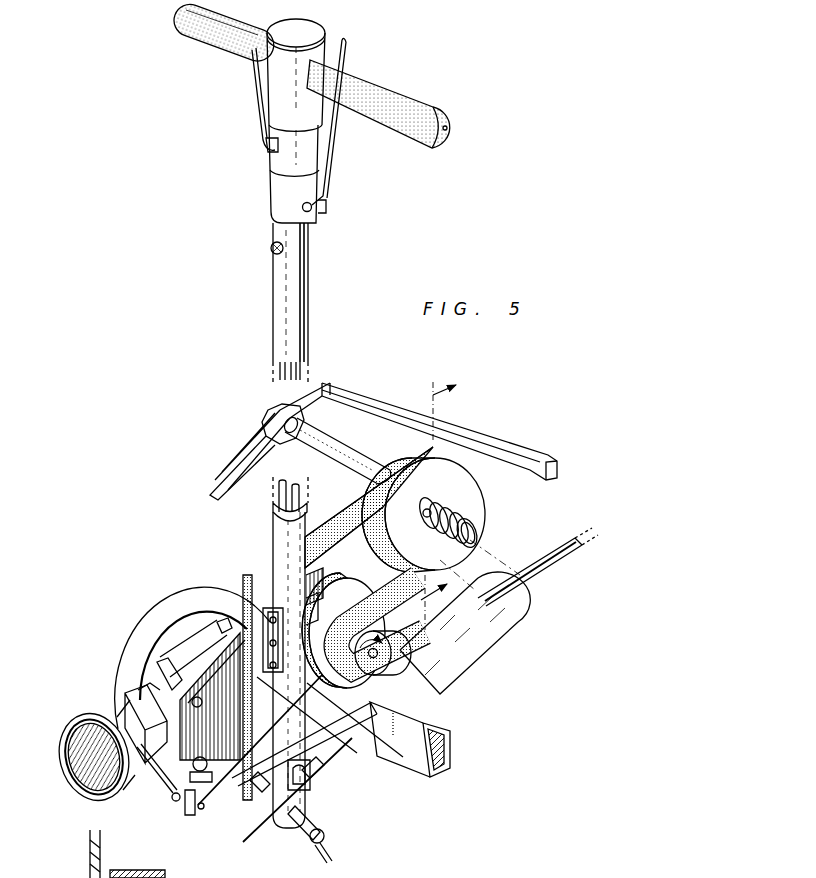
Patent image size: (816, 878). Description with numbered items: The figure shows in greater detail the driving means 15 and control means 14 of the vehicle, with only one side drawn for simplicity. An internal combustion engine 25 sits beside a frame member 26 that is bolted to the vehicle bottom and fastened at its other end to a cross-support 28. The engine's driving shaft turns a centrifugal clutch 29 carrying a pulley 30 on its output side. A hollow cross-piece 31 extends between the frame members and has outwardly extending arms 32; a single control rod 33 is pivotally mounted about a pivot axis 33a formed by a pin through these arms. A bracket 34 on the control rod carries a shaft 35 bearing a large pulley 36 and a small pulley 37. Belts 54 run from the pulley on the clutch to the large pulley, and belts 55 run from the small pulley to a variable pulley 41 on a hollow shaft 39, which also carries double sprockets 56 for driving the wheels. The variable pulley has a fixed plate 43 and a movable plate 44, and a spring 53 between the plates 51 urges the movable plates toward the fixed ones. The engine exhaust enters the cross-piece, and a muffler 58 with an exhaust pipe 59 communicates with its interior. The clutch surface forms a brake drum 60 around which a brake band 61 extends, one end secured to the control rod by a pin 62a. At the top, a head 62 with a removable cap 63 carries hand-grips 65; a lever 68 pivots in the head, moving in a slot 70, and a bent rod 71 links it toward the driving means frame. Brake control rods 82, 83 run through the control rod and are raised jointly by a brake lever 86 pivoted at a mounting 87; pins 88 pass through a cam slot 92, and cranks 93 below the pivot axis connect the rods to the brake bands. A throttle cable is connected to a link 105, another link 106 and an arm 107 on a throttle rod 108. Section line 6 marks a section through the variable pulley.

The control means 14 is at (405, 68).
The driving means 15 is at (238, 580).
The internal combustion engine 25 is at (185, 648).
The frame member 26 is at (145, 740).
The cross-support 28 is at (510, 452).
The centrifugal clutch 29 is at (232, 780).
The pulley 30 is at (312, 780).
The cross-piece 31 is at (452, 734).
The arm 32 is at (358, 728).
The control rod 33 is at (290, 296).
The pivot axis 33a is at (292, 800).
The bracket 34 is at (262, 628).
The shaft 35 is at (378, 656).
The large pulley 36 is at (343, 607).
The small pulley 37 is at (392, 653).
The shaft 39 is at (318, 446).
The variable pulley 41 is at (488, 504).
The fixed plate 43 is at (373, 533).
The movable plate 44 is at (440, 490).
The plate 51 is at (432, 510).
The spring 53 is at (476, 527).
The belt 54 is at (330, 740).
The belt 55 is at (372, 510).
The sprocket 56 is at (262, 420).
The muffler 58 is at (505, 604).
The exhaust pipe 59 is at (560, 558).
The brake drum 60 is at (227, 737).
The brake band 61 is at (138, 690).
The head 62 is at (300, 148).
The pin 62a is at (324, 764).
The cap 63 is at (312, 33).
The hand-grip 65 is at (205, 50).
The lever 68 is at (255, 95).
The slot 70 is at (266, 145).
The bent rod 71 is at (290, 494).
The brake control rod 82 is at (278, 488).
The brake control rod 83 is at (300, 370).
The brake lever 86 is at (330, 135).
The pivot mounting 87 is at (270, 248).
The pin 88 is at (312, 208).
The cam slot 92 is at (328, 203).
The crank 93 is at (325, 838).
The link 105 is at (202, 812).
The link 106 is at (188, 812).
The arm 107 is at (172, 800).
The throttle rod 108 is at (160, 775).
The section line 6 is at (438, 506).